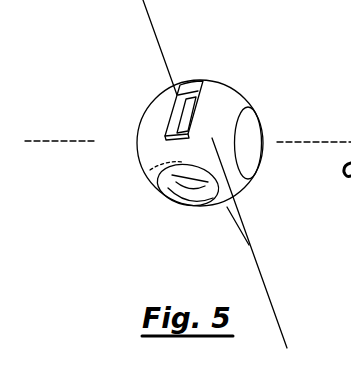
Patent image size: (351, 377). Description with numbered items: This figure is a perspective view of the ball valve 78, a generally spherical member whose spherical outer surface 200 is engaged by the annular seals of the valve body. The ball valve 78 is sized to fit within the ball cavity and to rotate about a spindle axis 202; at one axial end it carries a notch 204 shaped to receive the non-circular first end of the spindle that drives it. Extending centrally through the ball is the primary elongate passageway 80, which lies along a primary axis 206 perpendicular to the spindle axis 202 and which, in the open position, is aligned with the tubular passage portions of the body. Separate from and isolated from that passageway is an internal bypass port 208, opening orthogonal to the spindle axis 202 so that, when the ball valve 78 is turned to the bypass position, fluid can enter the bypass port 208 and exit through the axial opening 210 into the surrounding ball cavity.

The ball valve 78 is at (250, 79).
The primary elongate passageway 80 is at (249, 126).
The spherical outer surface 200 is at (250, 246).
The spindle axis 202 is at (279, 322).
The notch 204 is at (178, 95).
The primary axis 206 is at (27, 140).
The internal bypass port 208 is at (176, 178).
The axial opening 210 is at (203, 187).